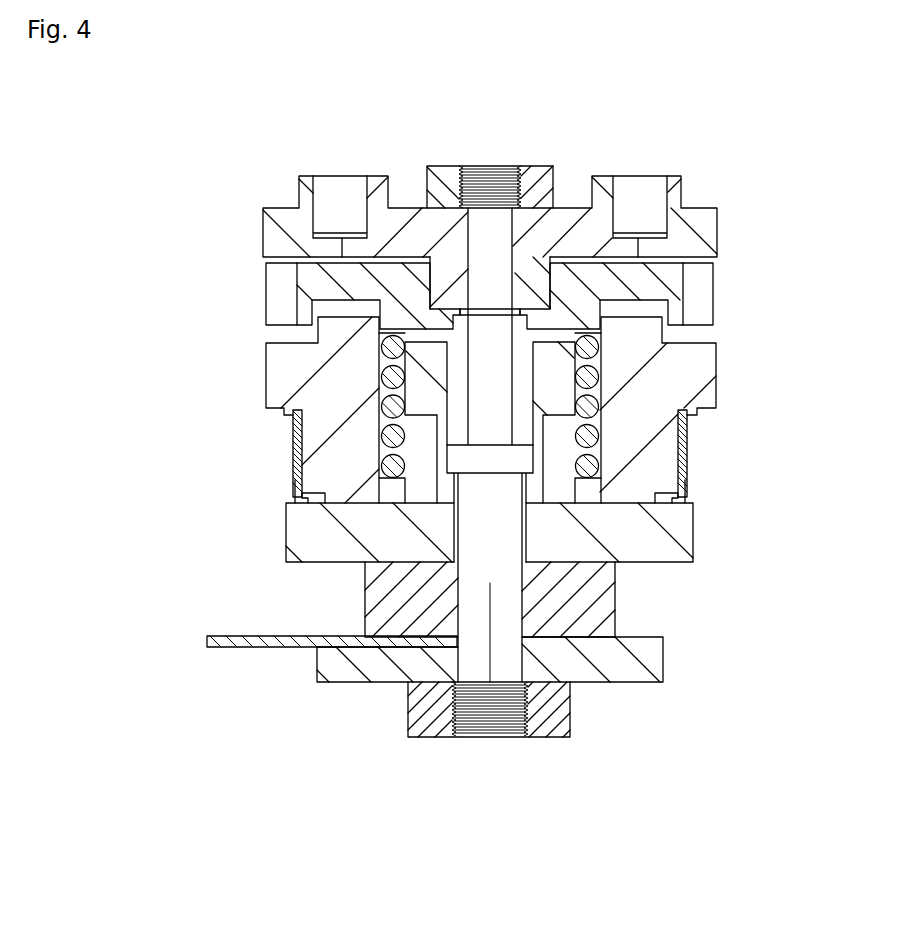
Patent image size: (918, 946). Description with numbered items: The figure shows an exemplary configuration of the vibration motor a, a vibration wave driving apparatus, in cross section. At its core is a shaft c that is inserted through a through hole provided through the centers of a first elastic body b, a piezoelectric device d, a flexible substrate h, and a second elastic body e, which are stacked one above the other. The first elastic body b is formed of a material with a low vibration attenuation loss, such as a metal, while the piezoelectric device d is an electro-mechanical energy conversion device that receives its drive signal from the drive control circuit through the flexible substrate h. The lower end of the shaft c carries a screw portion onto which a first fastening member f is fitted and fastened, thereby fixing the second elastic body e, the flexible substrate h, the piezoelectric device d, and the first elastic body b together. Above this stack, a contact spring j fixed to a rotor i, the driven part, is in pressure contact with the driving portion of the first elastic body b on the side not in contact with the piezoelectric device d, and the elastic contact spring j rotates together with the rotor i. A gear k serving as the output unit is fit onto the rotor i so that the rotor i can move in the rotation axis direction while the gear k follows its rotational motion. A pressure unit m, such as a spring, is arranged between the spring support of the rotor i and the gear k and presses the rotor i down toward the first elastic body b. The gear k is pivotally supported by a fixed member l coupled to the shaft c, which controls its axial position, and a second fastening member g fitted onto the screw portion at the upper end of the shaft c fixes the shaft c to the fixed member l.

The vibration motor a is at (484, 452).
The first elastic body b is at (672, 527).
The shaft c is at (490, 287).
The piezoelectric device d is at (580, 606).
The second elastic body e is at (648, 664).
The first fastening member f is at (552, 715).
The second fastening member g is at (539, 166).
The flexible substrate h is at (268, 637).
The rotor i is at (282, 376).
The contact spring j is at (293, 470).
The gear k is at (303, 286).
The fixed member l is at (277, 230).
The pressure unit m is at (599, 403).